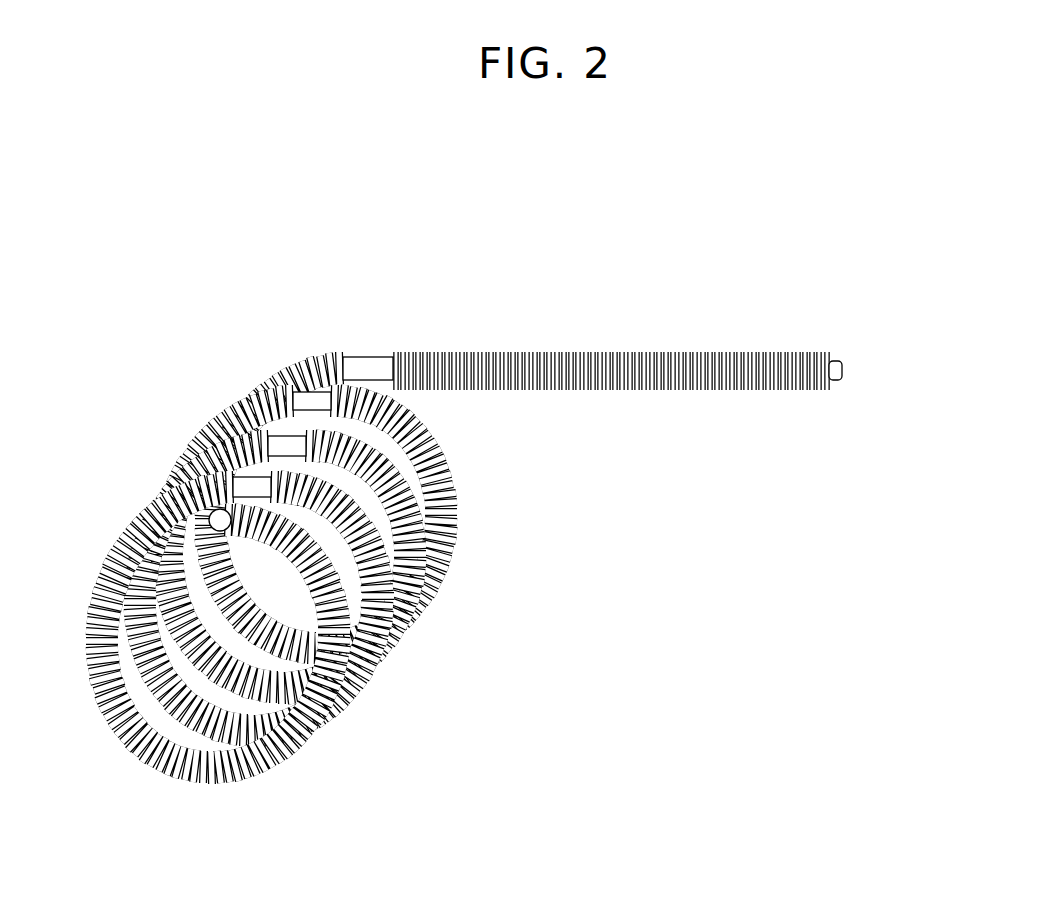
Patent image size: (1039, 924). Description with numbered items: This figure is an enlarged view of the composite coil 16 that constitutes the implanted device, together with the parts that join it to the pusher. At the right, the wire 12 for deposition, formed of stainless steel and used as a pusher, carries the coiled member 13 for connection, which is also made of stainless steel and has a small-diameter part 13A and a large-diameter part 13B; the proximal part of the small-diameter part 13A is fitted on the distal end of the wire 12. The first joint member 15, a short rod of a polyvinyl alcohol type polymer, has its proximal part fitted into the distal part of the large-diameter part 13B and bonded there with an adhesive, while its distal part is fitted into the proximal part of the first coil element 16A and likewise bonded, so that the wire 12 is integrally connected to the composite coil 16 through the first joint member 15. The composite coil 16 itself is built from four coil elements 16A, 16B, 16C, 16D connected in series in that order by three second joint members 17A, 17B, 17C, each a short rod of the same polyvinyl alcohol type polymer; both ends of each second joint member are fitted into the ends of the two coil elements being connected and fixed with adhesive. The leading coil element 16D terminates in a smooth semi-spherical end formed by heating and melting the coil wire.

The wire for deposition 12 is at (838, 385).
The coiled member for connection 13 is at (634, 321).
The small-diameter part 13A is at (716, 392).
The large-diameter part 13B is at (561, 392).
The first joint member 15 is at (387, 356).
The composite coil 16 is at (471, 506).
The first coil element 16A is at (297, 352).
The coil element 16B is at (394, 667).
The coil element 16C is at (348, 717).
The leading coil element 16D is at (287, 773).
The second joint member 17A is at (304, 395).
The second joint member 17B is at (276, 447).
The second joint member 17C is at (243, 490).